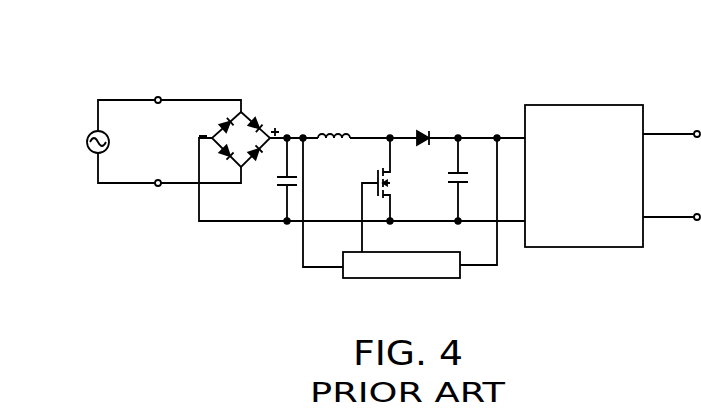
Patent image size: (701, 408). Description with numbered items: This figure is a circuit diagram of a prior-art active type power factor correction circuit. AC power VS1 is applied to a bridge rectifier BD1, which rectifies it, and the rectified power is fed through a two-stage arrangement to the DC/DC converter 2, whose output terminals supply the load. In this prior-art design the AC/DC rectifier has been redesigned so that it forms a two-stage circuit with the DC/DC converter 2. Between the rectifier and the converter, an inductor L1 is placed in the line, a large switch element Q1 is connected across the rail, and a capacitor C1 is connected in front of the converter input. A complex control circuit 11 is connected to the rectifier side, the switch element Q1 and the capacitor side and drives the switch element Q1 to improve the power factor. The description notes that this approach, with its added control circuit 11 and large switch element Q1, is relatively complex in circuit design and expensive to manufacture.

The DC/DC converter 2 is at (587, 112).
The control circuit 11 is at (355, 273).
The bridge rectifier BD1 is at (250, 108).
The AC power VS1 is at (164, 141).
The inductor L1 is at (334, 121).
The switch element Q1 is at (393, 195).
The capacitor C1 is at (473, 179).